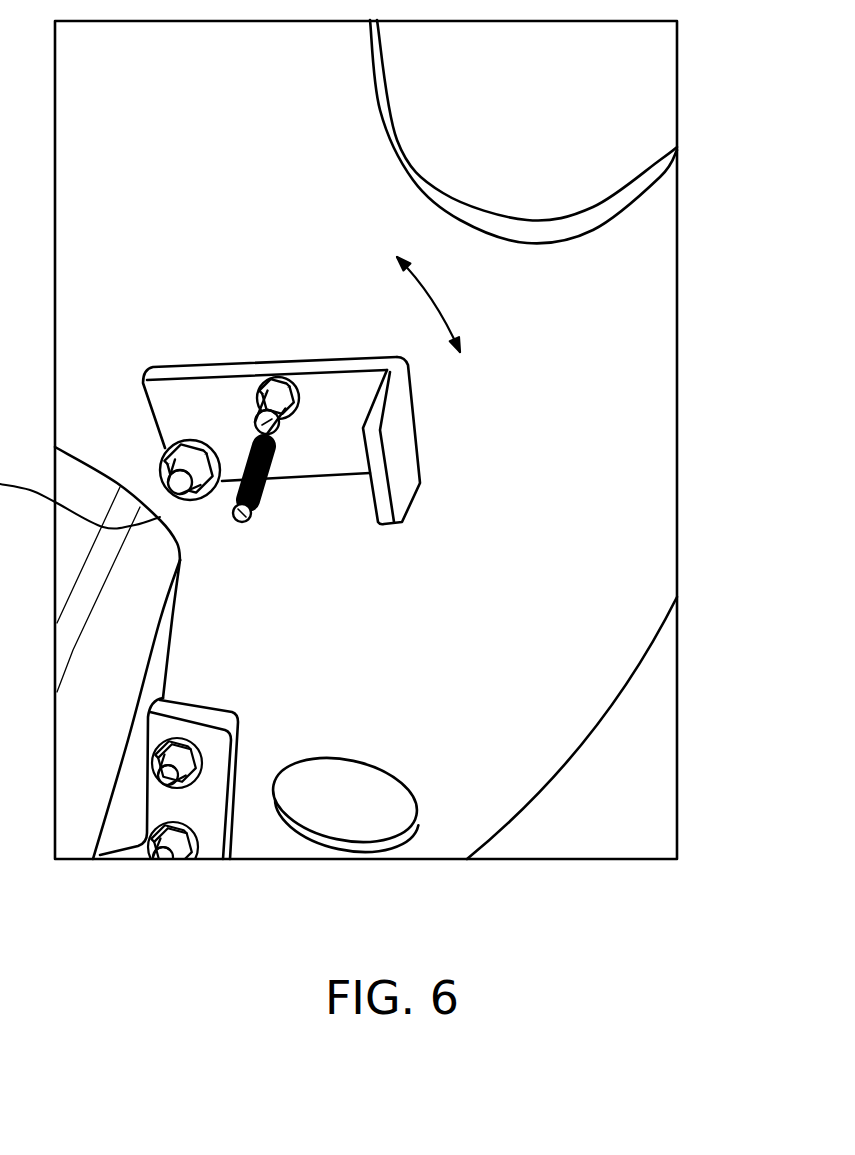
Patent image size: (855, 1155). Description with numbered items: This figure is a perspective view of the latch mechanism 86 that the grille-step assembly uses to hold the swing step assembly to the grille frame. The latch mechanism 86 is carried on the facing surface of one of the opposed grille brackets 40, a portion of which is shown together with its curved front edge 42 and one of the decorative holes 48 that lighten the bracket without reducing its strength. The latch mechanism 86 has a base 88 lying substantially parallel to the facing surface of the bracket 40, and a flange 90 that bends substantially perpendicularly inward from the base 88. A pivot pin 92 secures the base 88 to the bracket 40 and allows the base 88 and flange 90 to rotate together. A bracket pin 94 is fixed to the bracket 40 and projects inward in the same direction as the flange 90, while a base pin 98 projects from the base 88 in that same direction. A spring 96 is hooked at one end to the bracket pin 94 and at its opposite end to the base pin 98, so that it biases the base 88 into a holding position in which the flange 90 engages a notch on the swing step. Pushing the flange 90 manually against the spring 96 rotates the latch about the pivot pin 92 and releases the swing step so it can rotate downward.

The grille bracket 40 is at (605, 743).
The front edge 42 is at (618, 698).
The decorative hole 48 is at (393, 137).
The latch mechanism 86 is at (445, 400).
The base 88 is at (188, 360).
The flange 90 is at (432, 403).
The pivot pin 92 is at (158, 466).
The bracket pin 94 is at (243, 520).
The spring 96 is at (270, 480).
The base pin 98 is at (293, 383).